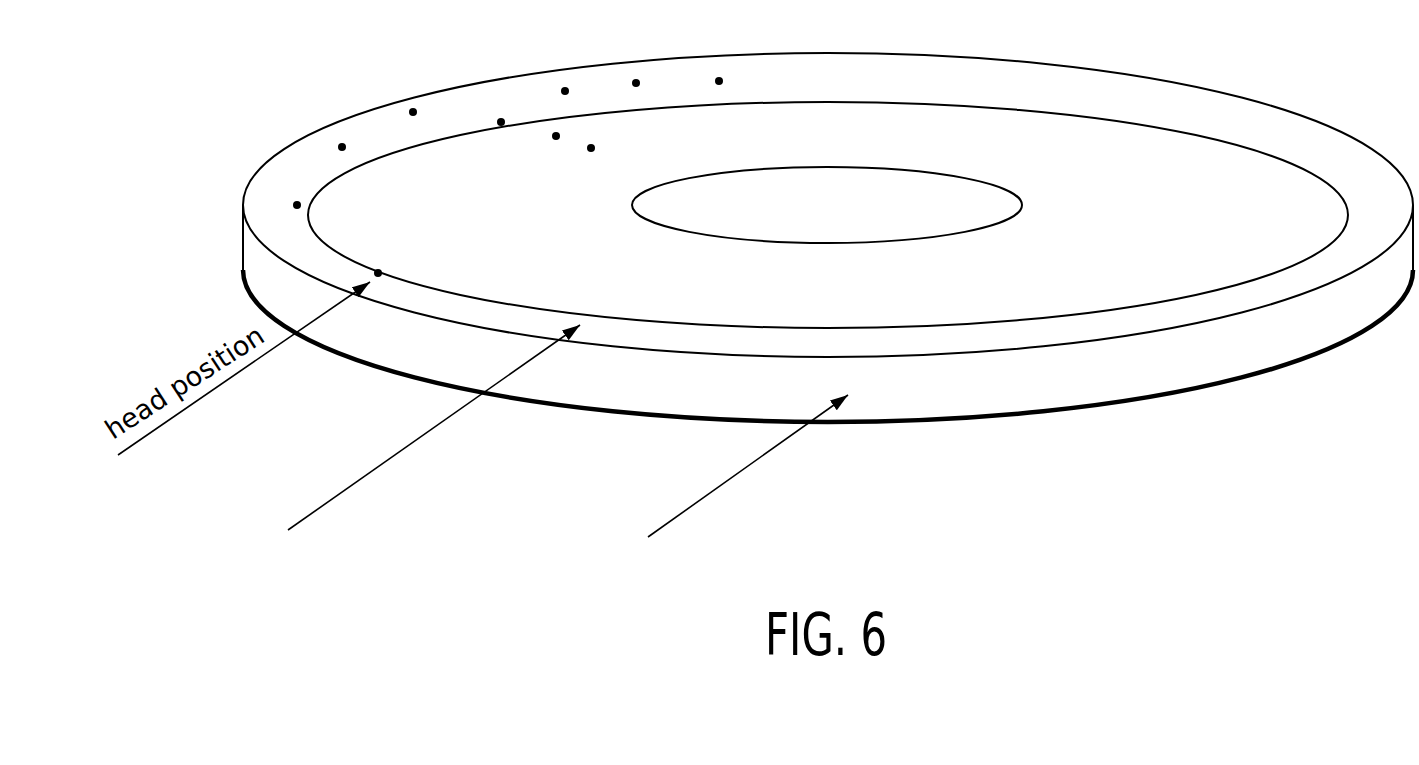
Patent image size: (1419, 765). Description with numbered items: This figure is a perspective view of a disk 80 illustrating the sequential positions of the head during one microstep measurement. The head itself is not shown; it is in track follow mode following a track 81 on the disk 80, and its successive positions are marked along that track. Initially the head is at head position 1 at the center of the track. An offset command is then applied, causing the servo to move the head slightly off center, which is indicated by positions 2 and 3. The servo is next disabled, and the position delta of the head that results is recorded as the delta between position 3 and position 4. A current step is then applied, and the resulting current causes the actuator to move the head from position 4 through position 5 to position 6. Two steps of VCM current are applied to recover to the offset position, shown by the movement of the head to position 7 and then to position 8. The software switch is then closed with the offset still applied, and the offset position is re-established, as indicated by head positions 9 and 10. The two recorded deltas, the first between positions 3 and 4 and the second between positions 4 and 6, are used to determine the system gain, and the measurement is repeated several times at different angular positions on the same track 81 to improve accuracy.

The disk 80 is at (673, 400).
The track 81 is at (445, 295).
The head position 1 is at (384, 257).
The head position 2 is at (297, 185).
The head position 3 is at (351, 145).
The head position 4 is at (423, 108).
The head position 5 is at (502, 103).
The head position 6 is at (554, 156).
The head position 7 is at (600, 133).
The head position 8 is at (575, 86).
The head position 9 is at (645, 78).
The head position 10 is at (737, 75).